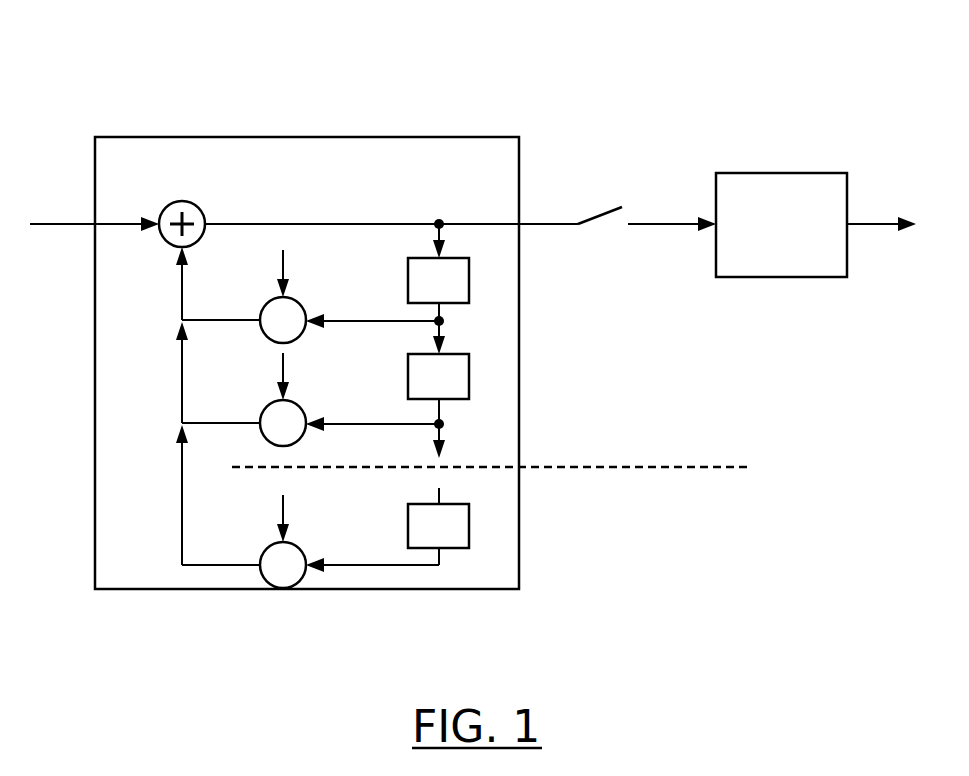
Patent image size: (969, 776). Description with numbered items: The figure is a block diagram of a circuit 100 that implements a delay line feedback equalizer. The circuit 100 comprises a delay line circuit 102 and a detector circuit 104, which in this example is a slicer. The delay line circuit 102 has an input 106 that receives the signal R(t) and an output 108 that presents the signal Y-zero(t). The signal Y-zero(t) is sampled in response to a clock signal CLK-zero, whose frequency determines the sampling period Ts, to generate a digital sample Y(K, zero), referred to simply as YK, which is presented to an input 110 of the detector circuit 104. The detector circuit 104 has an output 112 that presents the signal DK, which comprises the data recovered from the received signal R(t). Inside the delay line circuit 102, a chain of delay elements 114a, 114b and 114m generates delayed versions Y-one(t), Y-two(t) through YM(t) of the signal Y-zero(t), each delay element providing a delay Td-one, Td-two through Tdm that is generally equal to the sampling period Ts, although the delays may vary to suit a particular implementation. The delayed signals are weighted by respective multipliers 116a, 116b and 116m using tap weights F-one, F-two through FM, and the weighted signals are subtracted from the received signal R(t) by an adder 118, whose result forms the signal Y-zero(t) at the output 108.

The circuit 100 is at (344, 50).
The delay line circuit 102 is at (165, 137).
The detector circuit 104 is at (790, 173).
The input 106 is at (90, 228).
The output 108 is at (521, 228).
The input 110 is at (712, 228).
The output 112 is at (850, 228).
The delay element 114a is at (425, 258).
The delay element 114b is at (425, 354).
The delay element 114m is at (425, 504).
The multiplier 116a is at (272, 298).
The multiplier 116b is at (272, 401).
The multiplier 116m is at (272, 543).
The adder 118 is at (186, 201).